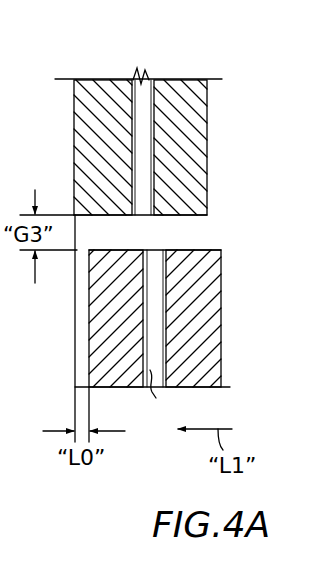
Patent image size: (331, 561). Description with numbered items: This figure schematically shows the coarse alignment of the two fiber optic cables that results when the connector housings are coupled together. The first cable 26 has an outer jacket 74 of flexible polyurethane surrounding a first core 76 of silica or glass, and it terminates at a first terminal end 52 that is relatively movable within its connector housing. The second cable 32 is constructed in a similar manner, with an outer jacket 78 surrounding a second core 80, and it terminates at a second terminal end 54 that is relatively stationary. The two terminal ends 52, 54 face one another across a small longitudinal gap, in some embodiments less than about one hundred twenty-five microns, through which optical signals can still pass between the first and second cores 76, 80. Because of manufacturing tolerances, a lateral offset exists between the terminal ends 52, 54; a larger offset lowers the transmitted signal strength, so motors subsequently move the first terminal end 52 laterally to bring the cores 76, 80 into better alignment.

The second cable 32 is at (90, 70).
The outer jacket 78 is at (190, 88).
The second core 80 is at (143, 93).
The second terminal end 54 is at (198, 217).
The first terminal end 52 is at (187, 249).
The outer jacket 74 is at (212, 322).
The first core 76 is at (157, 392).
The first cable 26 is at (127, 450).